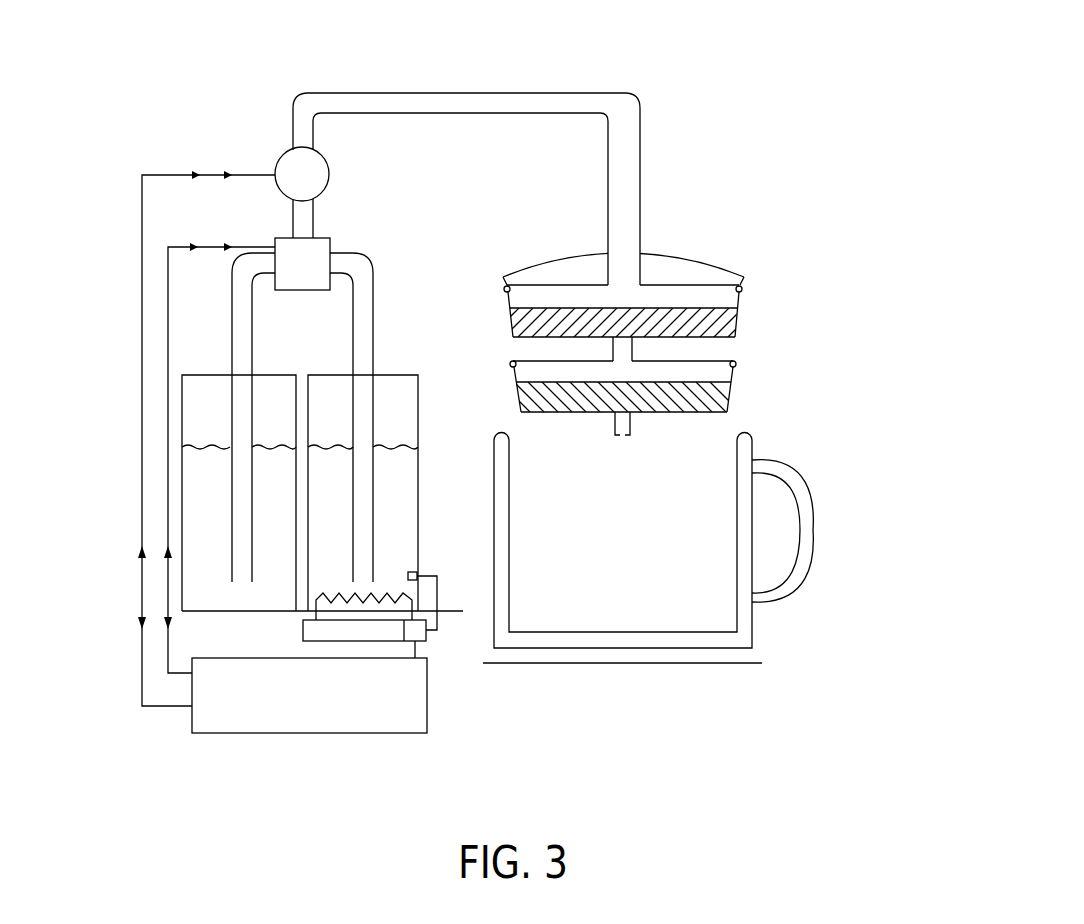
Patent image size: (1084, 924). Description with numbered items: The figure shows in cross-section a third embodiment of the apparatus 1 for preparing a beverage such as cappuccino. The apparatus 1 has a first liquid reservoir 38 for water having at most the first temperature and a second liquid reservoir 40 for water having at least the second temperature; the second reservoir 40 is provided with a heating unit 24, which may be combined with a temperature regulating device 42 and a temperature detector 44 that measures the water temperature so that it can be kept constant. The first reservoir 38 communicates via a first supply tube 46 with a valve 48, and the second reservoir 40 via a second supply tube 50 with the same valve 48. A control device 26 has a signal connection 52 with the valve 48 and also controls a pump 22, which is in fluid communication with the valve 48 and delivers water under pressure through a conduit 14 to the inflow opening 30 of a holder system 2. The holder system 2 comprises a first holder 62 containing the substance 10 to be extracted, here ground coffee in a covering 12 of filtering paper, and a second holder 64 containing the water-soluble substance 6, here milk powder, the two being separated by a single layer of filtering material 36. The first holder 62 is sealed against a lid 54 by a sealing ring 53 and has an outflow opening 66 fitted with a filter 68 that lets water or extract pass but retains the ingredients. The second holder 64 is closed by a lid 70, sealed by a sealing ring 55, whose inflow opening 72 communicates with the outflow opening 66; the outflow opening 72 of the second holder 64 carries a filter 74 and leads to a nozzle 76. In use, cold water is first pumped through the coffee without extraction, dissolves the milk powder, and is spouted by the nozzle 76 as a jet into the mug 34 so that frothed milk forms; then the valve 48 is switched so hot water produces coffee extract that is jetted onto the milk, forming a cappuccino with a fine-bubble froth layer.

The apparatus 1 is at (693, 731).
The holder system 2 is at (666, 260).
The substance soluble in a liquid 6 is at (680, 402).
The substance to be extracted 10 is at (740, 323).
The covering 12 is at (712, 283).
The conduit 14 is at (382, 86).
The pump 22 is at (277, 157).
The heating unit 24 is at (332, 628).
The control device 26 is at (403, 717).
The inflow opening 30 is at (623, 287).
The mug 34 is at (753, 622).
The layer of filtering material 36 is at (679, 283).
The first liquid reservoir 38 is at (210, 404).
The second liquid reservoir 40 is at (338, 404).
The temperature regulating device 42 is at (425, 640).
The temperature detector 44 is at (421, 570).
The first supply tube 46 is at (242, 335).
The valve 48 is at (290, 280).
The second supply tube 50 is at (362, 327).
The signal connection 52 is at (221, 243).
The sealing ring 53 is at (742, 288).
The lid 54 is at (651, 273).
The sealing ring 55 is at (736, 364).
The first holder 62 is at (742, 300).
The second holder 64 is at (735, 375).
The outflow opening 66 is at (620, 342).
The filter 68 is at (635, 344).
The lid 70 is at (612, 358).
The inflow opening 72 is at (625, 360).
The filter 74 is at (613, 425).
The nozzle 76 is at (620, 427).